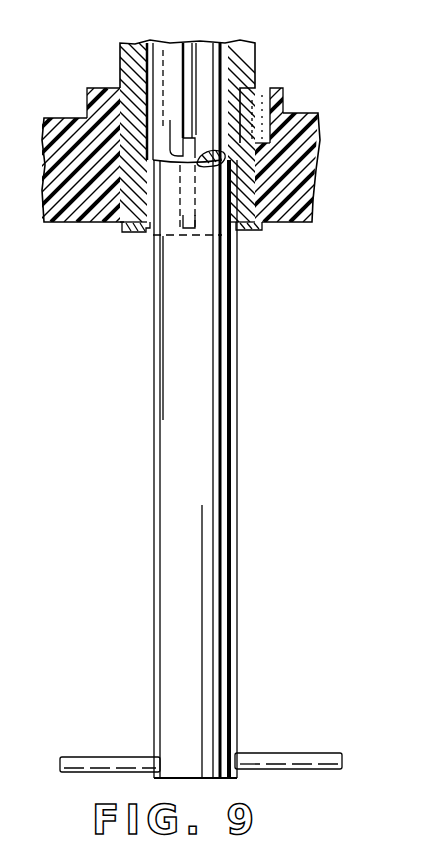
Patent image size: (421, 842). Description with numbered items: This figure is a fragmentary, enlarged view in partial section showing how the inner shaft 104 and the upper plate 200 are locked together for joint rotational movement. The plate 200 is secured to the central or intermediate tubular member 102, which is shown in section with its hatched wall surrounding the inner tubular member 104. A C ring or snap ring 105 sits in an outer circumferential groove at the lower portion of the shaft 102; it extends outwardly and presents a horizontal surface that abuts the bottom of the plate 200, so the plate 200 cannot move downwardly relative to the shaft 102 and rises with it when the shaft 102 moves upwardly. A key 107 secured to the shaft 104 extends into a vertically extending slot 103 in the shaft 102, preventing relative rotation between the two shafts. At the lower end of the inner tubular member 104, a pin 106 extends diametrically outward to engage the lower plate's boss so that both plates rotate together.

The central tubular member 102 is at (245, 60).
The axially extending slot 103 is at (190, 57).
The inner tubular member 104 is at (232, 334).
The snap ring 105 is at (122, 230).
The pin 106 is at (290, 754).
The key 107 is at (172, 135).
The plate 200 is at (311, 88).